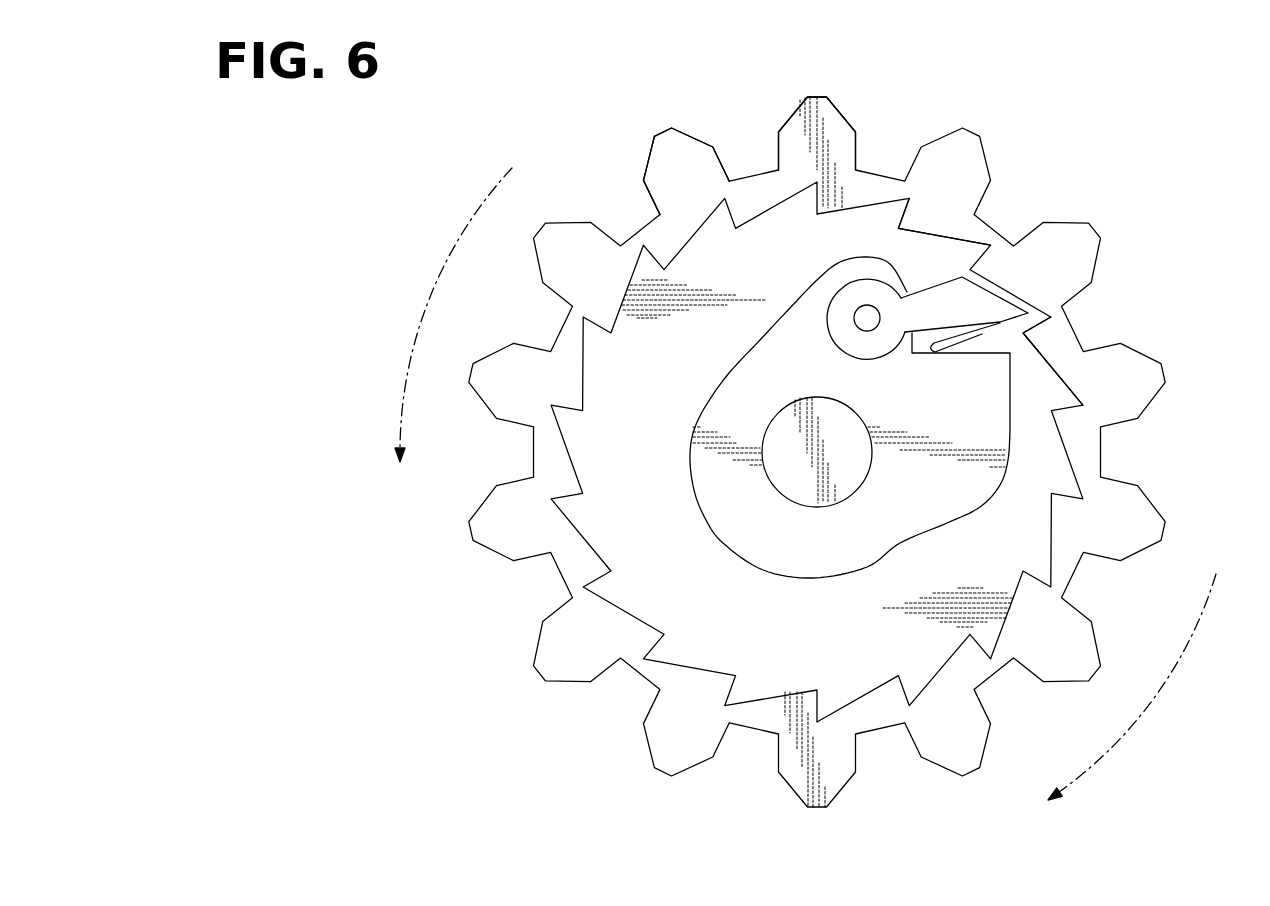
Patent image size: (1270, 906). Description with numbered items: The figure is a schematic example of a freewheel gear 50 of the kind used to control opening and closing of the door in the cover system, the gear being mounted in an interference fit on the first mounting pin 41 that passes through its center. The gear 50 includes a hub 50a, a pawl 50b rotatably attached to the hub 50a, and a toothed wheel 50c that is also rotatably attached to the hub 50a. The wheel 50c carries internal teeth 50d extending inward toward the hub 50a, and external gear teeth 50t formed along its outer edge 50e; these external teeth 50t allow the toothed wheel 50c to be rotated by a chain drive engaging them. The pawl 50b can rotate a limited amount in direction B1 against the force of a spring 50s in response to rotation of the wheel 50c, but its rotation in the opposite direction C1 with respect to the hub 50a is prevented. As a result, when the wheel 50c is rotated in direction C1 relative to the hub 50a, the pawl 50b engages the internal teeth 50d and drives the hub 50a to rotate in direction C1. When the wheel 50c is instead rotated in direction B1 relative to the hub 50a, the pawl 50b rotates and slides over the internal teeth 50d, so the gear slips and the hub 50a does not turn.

The freewheel gear 50 is at (1146, 92).
The external gear teeth 50t is at (793, 127).
The toothed wheel 50c is at (572, 560).
The internal teeth 50d is at (913, 220).
The outer edge 50e is at (1073, 327).
The hub 50a is at (960, 410).
The first mounting pin 41 is at (790, 445).
The pawl 50b is at (960, 300).
The spring 50s is at (982, 334).
The direction C1 is at (418, 325).
The direction B1 is at (1196, 711).